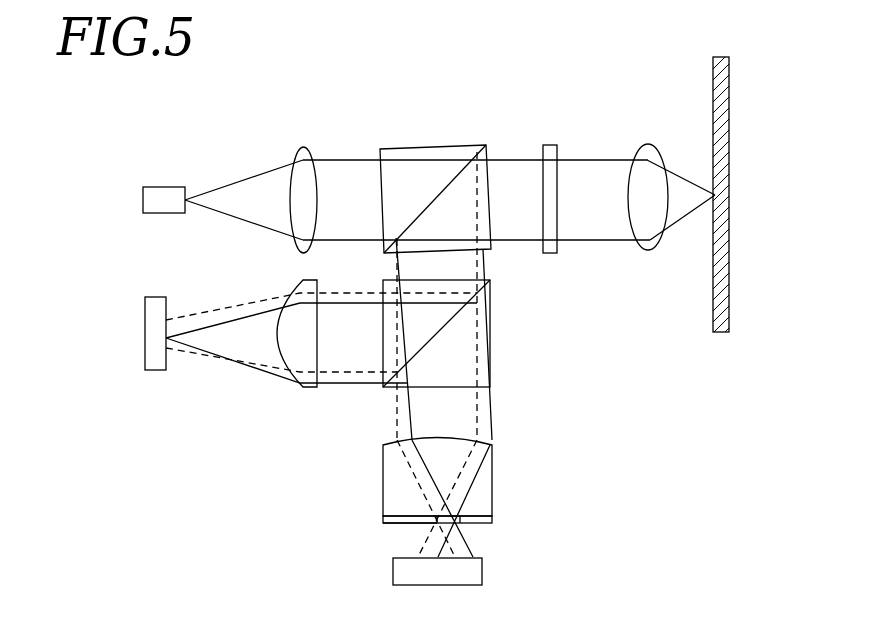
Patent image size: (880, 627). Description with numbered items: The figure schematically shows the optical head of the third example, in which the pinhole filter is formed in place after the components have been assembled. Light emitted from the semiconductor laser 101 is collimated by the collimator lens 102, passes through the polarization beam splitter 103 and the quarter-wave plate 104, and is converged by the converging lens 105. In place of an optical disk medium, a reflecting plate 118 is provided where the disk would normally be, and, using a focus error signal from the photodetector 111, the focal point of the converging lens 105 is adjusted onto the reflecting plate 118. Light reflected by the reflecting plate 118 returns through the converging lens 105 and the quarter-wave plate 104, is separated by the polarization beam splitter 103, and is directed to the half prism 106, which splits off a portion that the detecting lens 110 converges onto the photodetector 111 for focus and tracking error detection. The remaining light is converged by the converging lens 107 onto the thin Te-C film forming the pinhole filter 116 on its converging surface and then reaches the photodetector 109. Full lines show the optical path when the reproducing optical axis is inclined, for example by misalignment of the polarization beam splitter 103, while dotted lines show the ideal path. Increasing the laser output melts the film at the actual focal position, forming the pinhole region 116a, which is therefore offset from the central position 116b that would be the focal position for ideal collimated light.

The semiconductor laser 101 is at (171, 186).
The collimator lens 102 is at (298, 148).
The polarization beam splitter 103 is at (433, 146).
The quarter-wave plate 104 is at (549, 146).
The converging lens 105 is at (652, 147).
The reflecting plate 118 is at (728, 62).
The half prism 106 is at (497, 316).
The converging lens 107 is at (493, 452).
The detecting lens 110 is at (305, 383).
The photodetector 111 is at (155, 373).
The pinhole filter 116 is at (494, 520).
The pinhole region 116a is at (472, 531).
The central position 116b is at (423, 529).
The photodetector 109 is at (483, 573).